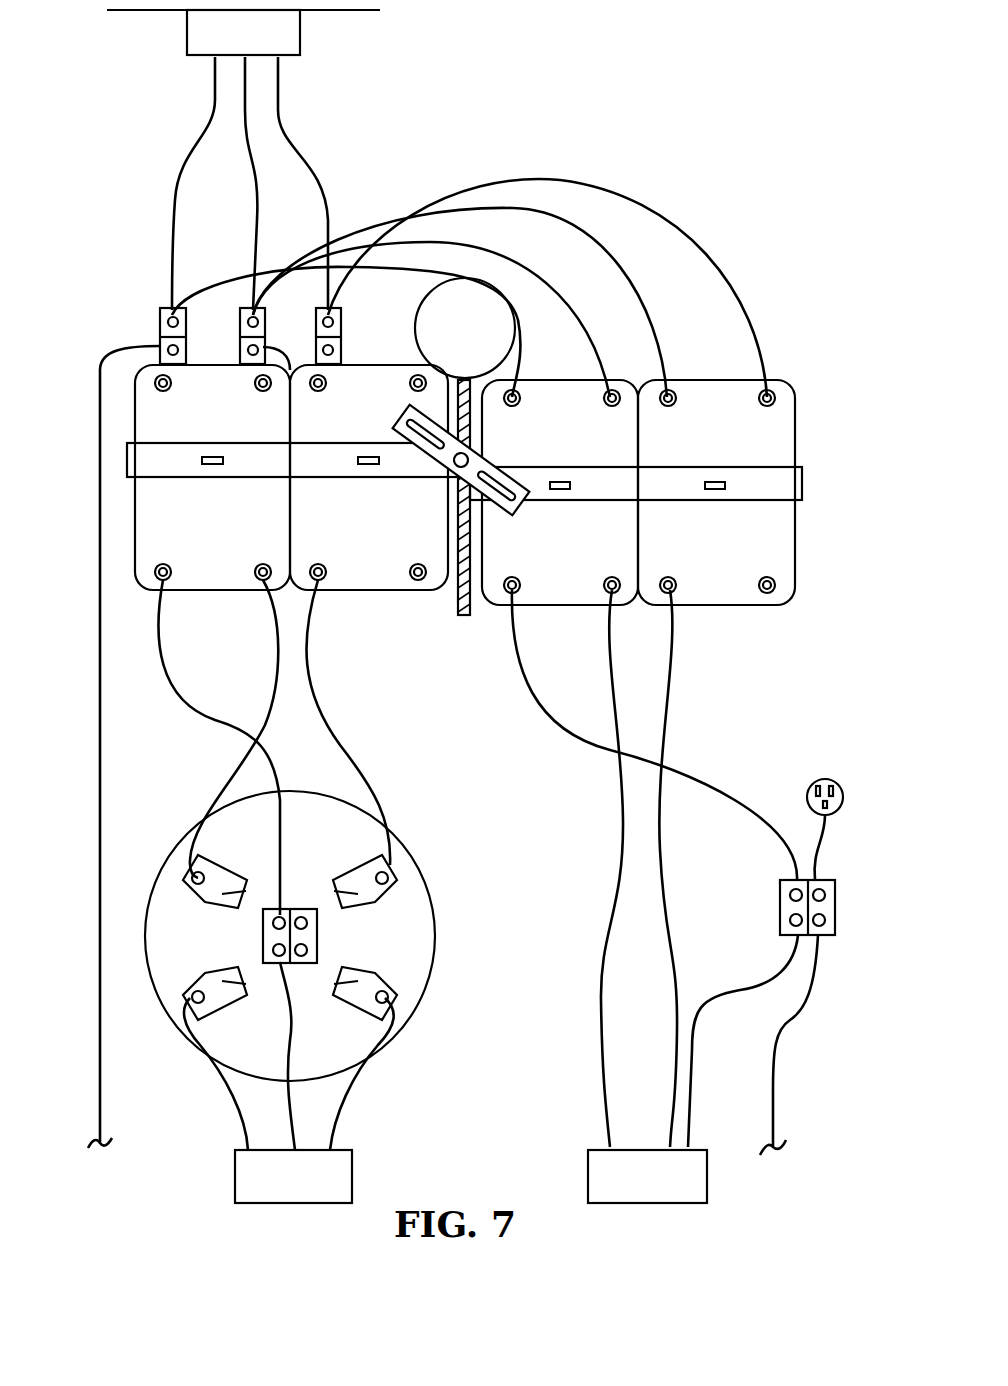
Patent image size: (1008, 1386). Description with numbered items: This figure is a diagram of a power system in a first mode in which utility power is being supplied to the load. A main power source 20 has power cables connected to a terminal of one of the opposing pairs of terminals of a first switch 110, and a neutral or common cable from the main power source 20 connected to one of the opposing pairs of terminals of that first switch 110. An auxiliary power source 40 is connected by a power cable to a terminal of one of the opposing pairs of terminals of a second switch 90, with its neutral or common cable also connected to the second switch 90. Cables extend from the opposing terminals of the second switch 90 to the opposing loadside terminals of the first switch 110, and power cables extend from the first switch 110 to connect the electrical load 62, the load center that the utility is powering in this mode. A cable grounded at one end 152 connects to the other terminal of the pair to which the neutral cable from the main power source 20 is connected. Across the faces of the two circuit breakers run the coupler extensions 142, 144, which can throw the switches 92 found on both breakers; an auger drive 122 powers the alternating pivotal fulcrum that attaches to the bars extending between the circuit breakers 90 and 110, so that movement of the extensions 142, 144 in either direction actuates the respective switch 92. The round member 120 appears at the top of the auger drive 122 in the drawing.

The main power source 20 is at (293, 1176).
The auxiliary power source 40 is at (647, 1176).
The electrical load 62 is at (243, 32).
The second switch 90 is at (638, 492).
The switches 92 is at (717, 477).
The first switch 110 is at (291, 477).
The pivot knob 120 is at (465, 328).
The auger drive 122 is at (458, 613).
The extension 142 is at (388, 474).
The extension 144 is at (542, 474).
The cable grounded at one end 152 is at (100, 1118).